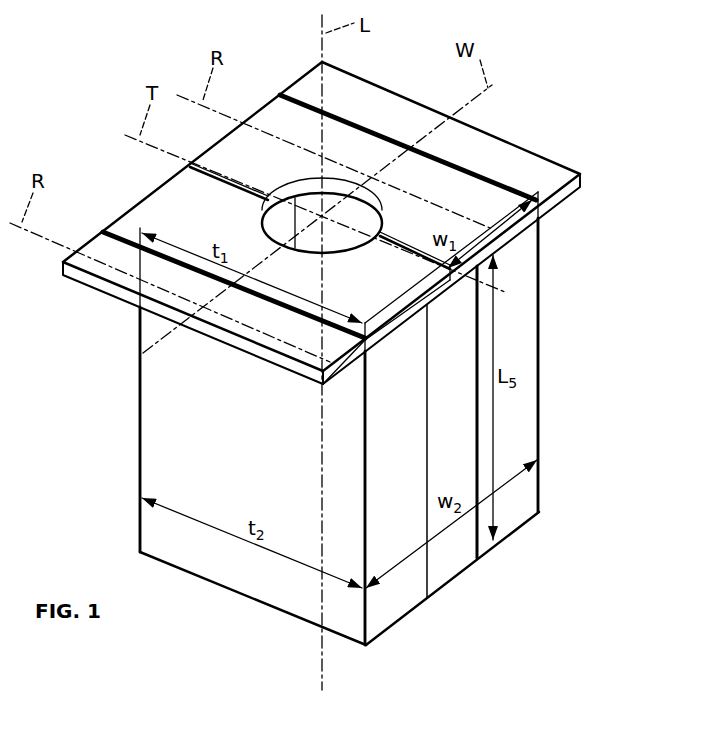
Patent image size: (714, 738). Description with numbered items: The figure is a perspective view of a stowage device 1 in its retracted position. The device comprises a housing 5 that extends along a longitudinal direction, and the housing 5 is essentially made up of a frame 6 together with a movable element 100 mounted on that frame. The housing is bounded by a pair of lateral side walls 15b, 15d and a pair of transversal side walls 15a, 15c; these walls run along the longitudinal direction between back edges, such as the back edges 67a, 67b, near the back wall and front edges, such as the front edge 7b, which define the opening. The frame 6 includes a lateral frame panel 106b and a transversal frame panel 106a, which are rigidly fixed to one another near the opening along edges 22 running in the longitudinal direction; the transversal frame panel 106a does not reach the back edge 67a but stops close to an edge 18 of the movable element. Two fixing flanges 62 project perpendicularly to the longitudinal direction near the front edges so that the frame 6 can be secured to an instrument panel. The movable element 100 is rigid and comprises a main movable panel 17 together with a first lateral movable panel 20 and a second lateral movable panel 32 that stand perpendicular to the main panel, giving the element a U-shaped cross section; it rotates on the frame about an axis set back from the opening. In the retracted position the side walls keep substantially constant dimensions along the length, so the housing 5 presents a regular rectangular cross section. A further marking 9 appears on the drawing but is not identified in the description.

The stowage device 1 is at (543, 248).
The housing 5 is at (567, 497).
The frame 6 is at (545, 170).
The front edge 7b is at (540, 228).
The plate 9 is at (339, 260).
The transversal side wall 15a is at (185, 440).
The lateral side wall 15b is at (552, 565).
The transversal side wall 15c is at (540, 358).
The lateral side wall 15d is at (138, 392).
The main movable panel 17 is at (252, 476).
The edge 18 is at (533, 238).
The first lateral movable panel 20 is at (386, 498).
The edges 22 is at (140, 343).
The second lateral movable panel 32 is at (521, 365).
The fixing flanges 62 is at (90, 246).
The back edge 67a is at (230, 590).
The back edge 67b is at (535, 518).
The movable element 100 is at (543, 426).
The transversal frame panel 106a is at (355, 373).
The lateral frame panel 106b is at (453, 537).